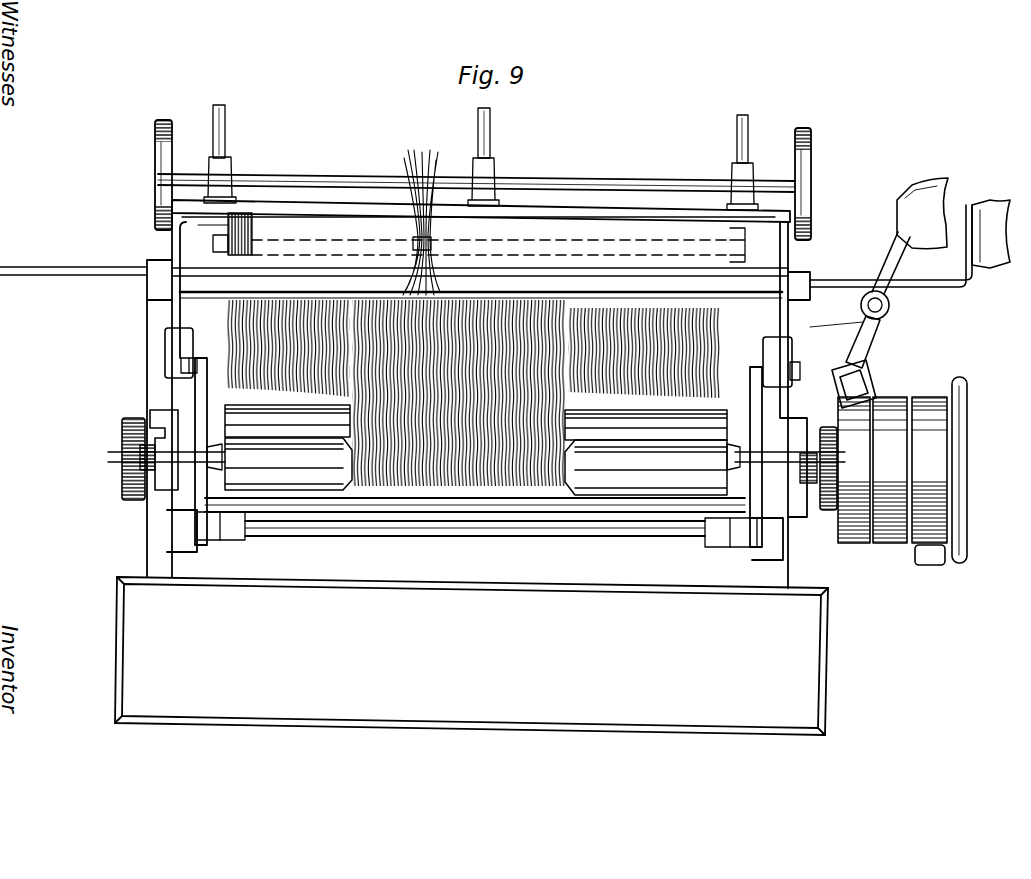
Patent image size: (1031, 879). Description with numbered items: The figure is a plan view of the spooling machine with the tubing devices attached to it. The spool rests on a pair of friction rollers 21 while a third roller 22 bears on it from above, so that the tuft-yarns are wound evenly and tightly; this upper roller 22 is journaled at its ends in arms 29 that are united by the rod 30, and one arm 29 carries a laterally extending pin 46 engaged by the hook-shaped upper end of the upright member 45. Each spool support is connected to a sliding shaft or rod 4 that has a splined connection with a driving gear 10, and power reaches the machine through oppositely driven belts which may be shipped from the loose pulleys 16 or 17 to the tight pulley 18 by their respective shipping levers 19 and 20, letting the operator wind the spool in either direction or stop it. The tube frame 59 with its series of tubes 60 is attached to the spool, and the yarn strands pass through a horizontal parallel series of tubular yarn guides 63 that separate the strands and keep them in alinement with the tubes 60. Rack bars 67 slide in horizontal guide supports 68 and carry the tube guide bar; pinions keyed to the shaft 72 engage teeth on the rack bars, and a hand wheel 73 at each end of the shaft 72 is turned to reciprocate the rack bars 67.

The sliding shaft or rod 4 is at (112, 455).
The driving gear 10 is at (130, 425).
The loose pulley 16 is at (935, 395).
The loose pulley 17 is at (838, 525).
The tight pulley 18 is at (900, 545).
The shipping lever 19 is at (988, 258).
The shipping lever 20 is at (862, 352).
The friction rollers 21 is at (730, 430).
The roller 22 is at (560, 545).
The arms 29 is at (200, 407).
The rod 30 is at (655, 538).
The upright member 45 is at (188, 357).
The pin 46 is at (182, 368).
The tube frame 59 is at (213, 246).
The tubes 60 is at (252, 232).
The tubular yarn guides 63 is at (424, 256).
The rack bars 67 is at (222, 140).
The guide supports 68 is at (220, 172).
The shaft 72 is at (618, 186).
The hand wheel 73 is at (165, 158).